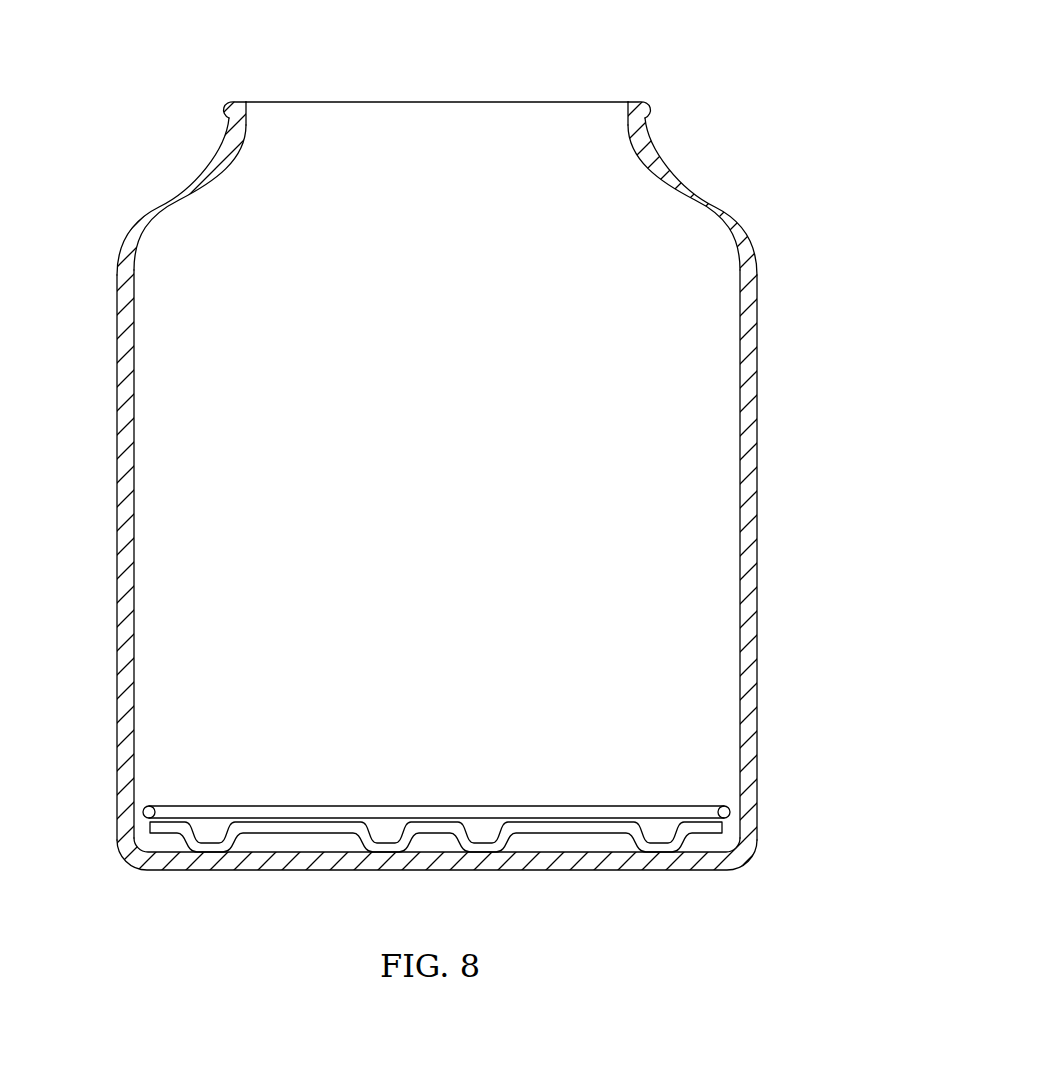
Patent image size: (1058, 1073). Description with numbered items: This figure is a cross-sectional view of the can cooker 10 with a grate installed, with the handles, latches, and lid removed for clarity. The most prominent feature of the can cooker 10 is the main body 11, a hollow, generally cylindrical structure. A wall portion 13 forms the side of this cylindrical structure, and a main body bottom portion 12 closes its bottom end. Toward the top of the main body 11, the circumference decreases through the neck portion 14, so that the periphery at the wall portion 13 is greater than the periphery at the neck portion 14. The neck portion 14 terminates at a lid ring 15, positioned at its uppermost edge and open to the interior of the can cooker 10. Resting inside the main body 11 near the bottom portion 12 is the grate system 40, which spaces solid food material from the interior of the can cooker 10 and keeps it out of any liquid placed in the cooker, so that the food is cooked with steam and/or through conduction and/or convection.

The can cooker 10 is at (485, 175).
The main body 11 is at (464, 493).
The main body bottom portion 12 is at (158, 872).
The wall portion 13 is at (757, 583).
The neck portion 14 is at (708, 197).
The lid ring 15 is at (647, 100).
The grate system 40 is at (432, 793).